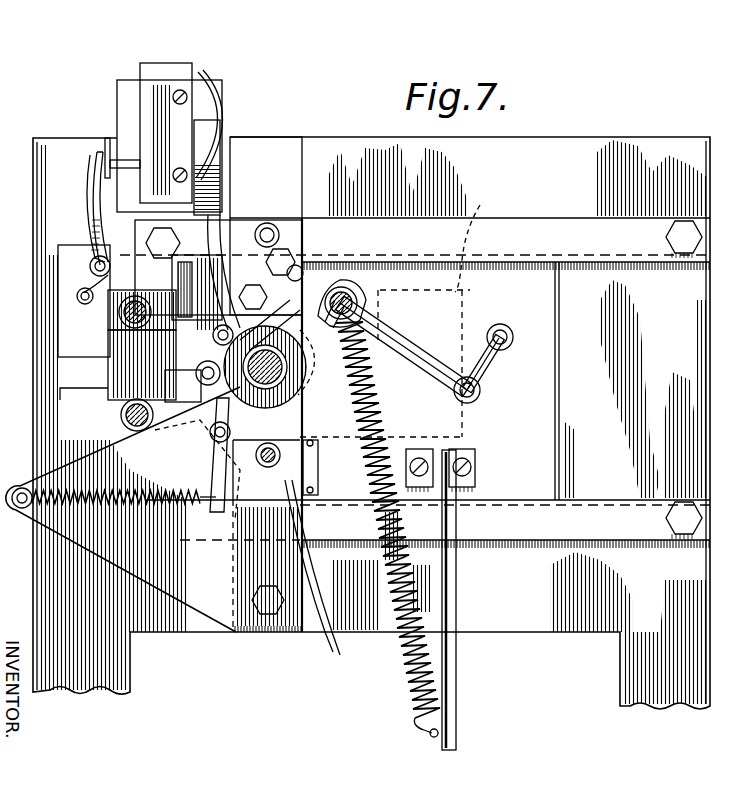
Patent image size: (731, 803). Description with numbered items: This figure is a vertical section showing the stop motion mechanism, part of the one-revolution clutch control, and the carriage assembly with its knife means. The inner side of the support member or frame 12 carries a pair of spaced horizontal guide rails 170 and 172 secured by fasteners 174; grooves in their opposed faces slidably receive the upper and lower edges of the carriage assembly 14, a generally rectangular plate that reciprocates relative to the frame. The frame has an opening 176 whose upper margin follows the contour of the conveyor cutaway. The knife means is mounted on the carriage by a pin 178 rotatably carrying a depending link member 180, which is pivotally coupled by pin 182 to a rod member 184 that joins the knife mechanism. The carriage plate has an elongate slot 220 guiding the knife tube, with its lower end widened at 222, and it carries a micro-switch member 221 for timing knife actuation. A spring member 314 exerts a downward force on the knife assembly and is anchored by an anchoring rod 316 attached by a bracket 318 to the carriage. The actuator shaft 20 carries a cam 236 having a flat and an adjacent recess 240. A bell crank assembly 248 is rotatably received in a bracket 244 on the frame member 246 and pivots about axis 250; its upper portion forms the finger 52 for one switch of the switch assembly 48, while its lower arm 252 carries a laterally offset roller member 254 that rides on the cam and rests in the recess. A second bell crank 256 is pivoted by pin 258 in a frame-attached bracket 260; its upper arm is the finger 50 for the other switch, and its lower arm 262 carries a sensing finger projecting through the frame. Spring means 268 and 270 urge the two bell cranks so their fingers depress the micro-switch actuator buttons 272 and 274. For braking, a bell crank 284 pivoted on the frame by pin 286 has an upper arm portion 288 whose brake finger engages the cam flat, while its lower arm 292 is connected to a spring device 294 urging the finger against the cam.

The support member 12 is at (535, 146).
The carriage assembly 14 is at (532, 295).
The actuator shaft 20 is at (263, 345).
The switch assembly 48 is at (183, 55).
The finger 50 is at (95, 160).
The finger 52 is at (213, 178).
The guide rail 170 is at (526, 225).
The guide rail 172 is at (531, 533).
The fasteners 174 is at (682, 225).
The opening 176 is at (481, 240).
The pin 178 is at (510, 330).
The link member 180 is at (492, 367).
The pin 182 is at (470, 402).
The rod member 184 is at (420, 355).
The elongate slot 220 is at (366, 381).
The micro-switch member 221 is at (320, 466).
The widened portion 222 is at (360, 384).
The cam 236 is at (265, 380).
The recess 240 is at (192, 360).
The bracket 244 is at (242, 256).
The frame member 246 is at (300, 186).
The bell crank assembly 248 is at (220, 226).
The axis 250 is at (218, 257).
The arm 252 is at (228, 300).
The roller member 254 is at (185, 378).
The bell crank 256 is at (82, 218).
The pin 258 is at (78, 262).
The bracket 260 is at (100, 336).
The lower arm 262 is at (180, 290).
The spring means 268 is at (175, 340).
The spring means 270 is at (104, 256).
The actuator button 272 is at (112, 129).
The actuator button 274 is at (214, 150).
The bell crank 284 is at (232, 430).
The pin 286 is at (210, 442).
The upper arm portion 288 is at (112, 393).
The lower arm 292 is at (236, 452).
The spring device 294 is at (82, 490).
The spring member 314 is at (375, 408).
The anchoring rod 316 is at (455, 590).
The bracket 318 is at (474, 478).